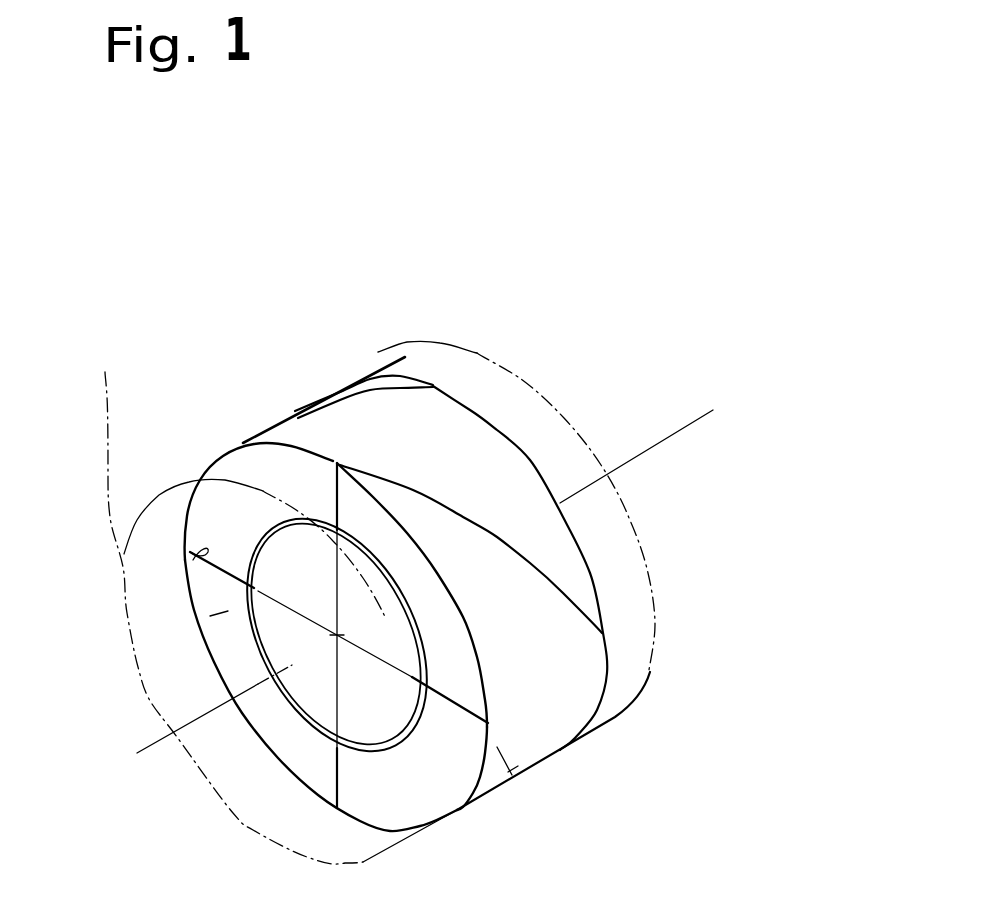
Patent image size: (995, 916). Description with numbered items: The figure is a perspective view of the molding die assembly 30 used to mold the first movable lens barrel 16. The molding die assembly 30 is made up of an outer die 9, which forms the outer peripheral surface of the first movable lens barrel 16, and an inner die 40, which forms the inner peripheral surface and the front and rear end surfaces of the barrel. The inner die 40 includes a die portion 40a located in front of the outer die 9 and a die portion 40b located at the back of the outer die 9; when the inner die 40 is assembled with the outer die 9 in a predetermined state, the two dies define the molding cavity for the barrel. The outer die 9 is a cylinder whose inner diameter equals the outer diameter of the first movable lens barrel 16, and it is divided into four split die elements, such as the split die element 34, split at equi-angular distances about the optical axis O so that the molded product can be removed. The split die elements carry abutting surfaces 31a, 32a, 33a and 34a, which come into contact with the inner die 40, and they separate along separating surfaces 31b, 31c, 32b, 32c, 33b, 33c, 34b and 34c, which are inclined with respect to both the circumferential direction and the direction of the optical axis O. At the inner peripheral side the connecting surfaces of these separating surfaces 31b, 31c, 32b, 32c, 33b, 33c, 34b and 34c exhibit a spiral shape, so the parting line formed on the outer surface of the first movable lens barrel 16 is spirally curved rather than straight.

The molding die assembly 30 is at (452, 410).
The inner die 40 is at (410, 262).
The die portion 40a is at (145, 572).
The die portion 40b is at (410, 364).
The outer die 9 is at (357, 428).
The abutting surface 31a is at (207, 507).
The separating surface 31b is at (500, 538).
The separating surface 31c is at (215, 578).
The abutting surface 32a is at (433, 607).
The separating surface 32b is at (497, 742).
The separating surface 32c is at (560, 590).
The abutting surface 33a is at (438, 790).
The separating surface 33b is at (341, 763).
The separating surface 33c is at (513, 777).
The split die element 34 is at (220, 613).
The abutting surface 34a is at (285, 737).
The separating surface 34b is at (200, 548).
The separating surface 34c is at (340, 793).
The first movable lens barrel 16 is at (250, 626).
The optical axis O is at (195, 722).